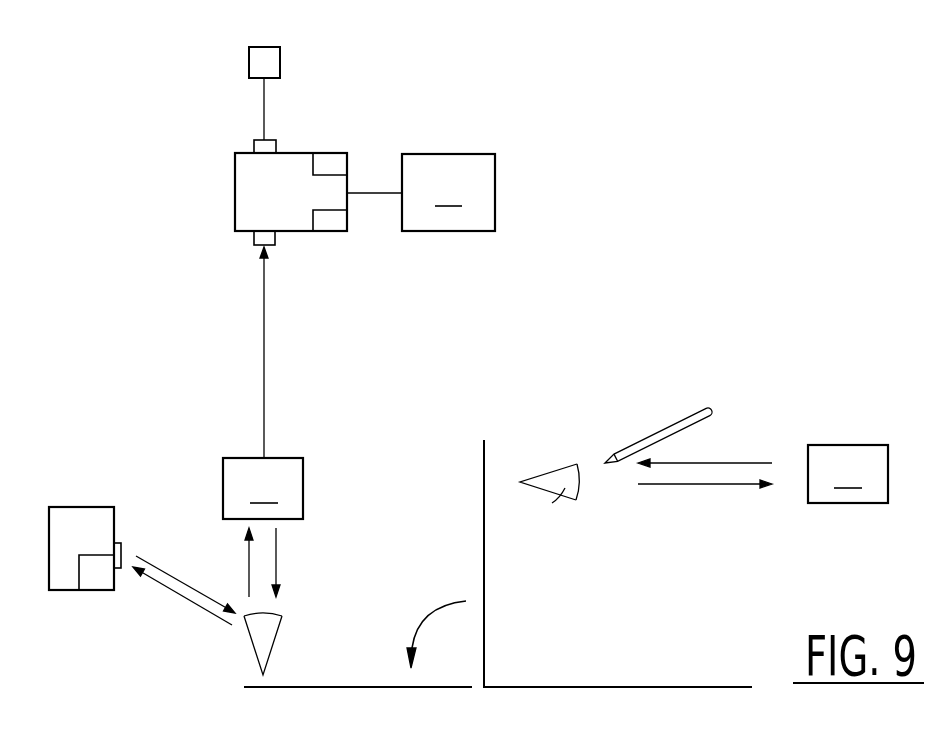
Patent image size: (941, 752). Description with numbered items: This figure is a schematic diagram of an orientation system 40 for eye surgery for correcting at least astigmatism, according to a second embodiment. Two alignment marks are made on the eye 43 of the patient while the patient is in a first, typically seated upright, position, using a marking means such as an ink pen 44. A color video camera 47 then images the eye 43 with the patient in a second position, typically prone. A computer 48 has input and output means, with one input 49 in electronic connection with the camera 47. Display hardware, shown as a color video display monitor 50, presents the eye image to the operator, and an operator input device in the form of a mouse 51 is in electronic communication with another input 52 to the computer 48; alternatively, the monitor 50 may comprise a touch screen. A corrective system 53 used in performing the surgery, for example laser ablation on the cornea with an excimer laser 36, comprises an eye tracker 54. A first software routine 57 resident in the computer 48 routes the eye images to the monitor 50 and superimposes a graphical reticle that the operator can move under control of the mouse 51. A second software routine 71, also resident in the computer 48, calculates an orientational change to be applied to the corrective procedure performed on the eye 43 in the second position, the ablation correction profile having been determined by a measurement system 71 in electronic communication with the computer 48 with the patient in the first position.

The orientation system 40 is at (760, 222).
The mouse 51 is at (250, 61).
The input 52 is at (254, 142).
The computer 48 is at (235, 192).
The first software routine 57 is at (325, 165).
The second software routine 71 is at (330, 223).
The color video display monitor 50 is at (448, 192).
The input 49 is at (255, 243).
The color video camera 47 is at (263, 527).
The corrective system 53 is at (82, 515).
The eye tracker 54 is at (98, 580).
The excimer laser 36 is at (119, 543).
The eye 43 is at (270, 637).
The ink pen 44 is at (667, 427).